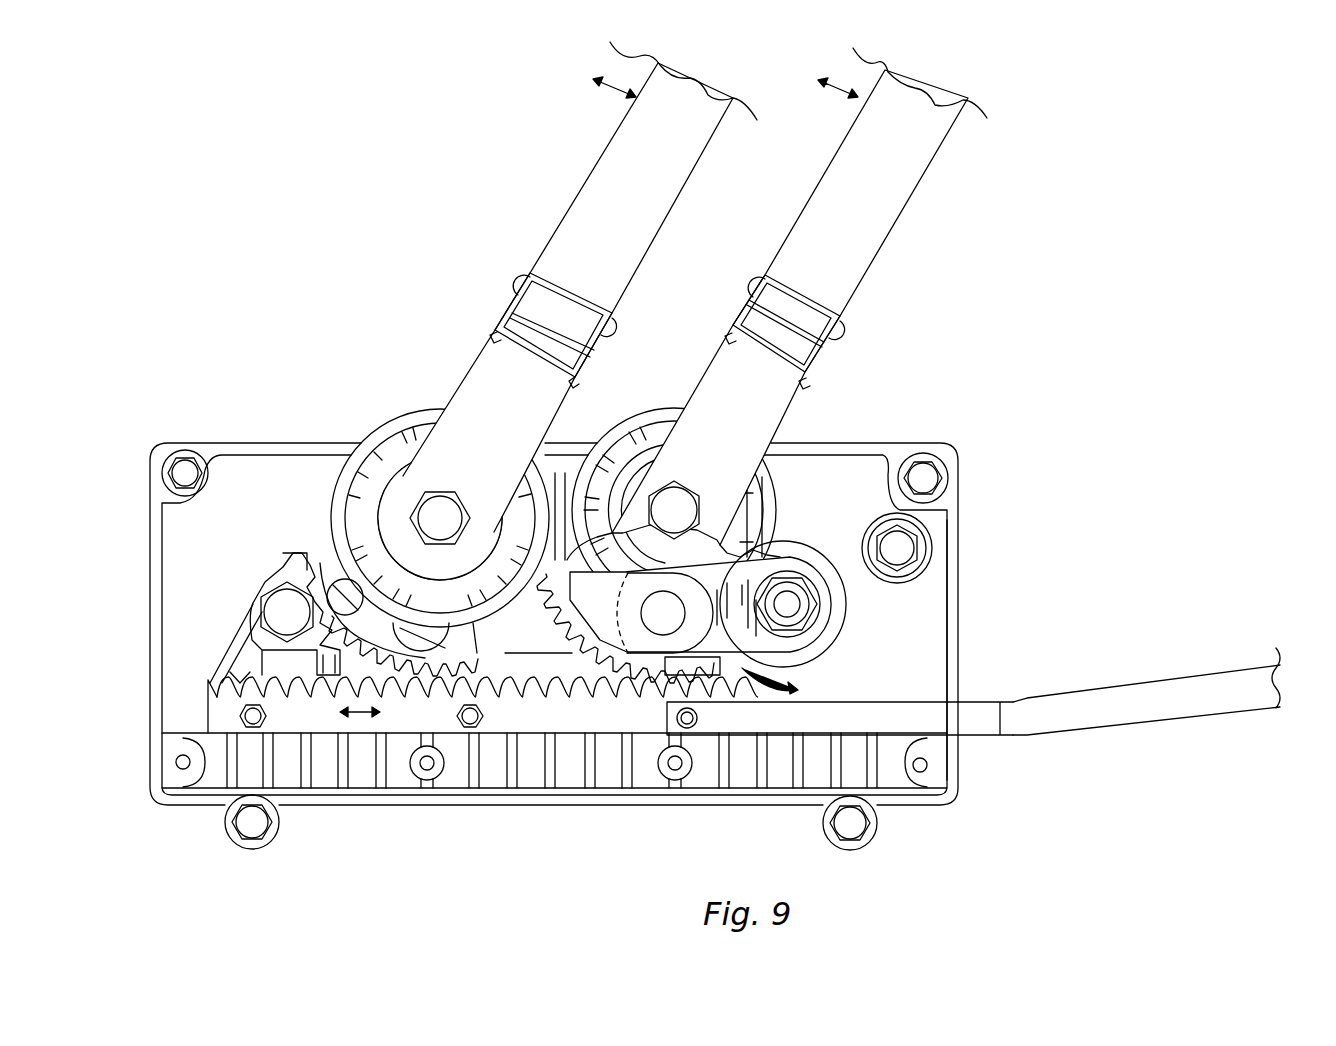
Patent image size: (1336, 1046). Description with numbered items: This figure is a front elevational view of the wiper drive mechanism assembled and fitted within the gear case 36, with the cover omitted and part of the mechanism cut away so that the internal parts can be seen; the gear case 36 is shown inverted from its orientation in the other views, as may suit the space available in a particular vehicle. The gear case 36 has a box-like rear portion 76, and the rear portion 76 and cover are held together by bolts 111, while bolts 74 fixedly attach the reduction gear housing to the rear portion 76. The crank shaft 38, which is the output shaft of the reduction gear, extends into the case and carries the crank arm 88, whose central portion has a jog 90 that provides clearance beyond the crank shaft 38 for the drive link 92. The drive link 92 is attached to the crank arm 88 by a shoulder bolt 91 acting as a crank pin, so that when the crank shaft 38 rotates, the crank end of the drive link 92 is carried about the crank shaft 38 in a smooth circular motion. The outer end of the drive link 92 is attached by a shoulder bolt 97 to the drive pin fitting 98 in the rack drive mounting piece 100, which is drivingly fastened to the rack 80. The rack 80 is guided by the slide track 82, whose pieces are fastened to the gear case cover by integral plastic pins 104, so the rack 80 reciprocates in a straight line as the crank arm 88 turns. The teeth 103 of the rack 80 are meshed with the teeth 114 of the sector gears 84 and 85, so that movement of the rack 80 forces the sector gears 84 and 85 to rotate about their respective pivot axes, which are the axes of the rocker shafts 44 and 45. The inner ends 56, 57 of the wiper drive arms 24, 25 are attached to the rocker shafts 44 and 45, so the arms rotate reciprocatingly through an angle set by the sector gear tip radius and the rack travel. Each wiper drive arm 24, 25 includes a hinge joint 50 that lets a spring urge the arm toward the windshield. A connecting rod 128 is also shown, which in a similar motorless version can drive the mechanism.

The wiper drive arm 24 is at (880, 258).
The wiper drive arm 25 is at (570, 248).
The gear case 36 is at (912, 440).
The crank shaft 38 is at (792, 607).
The rocker shaft 44 is at (678, 507).
The rocker shaft 45 is at (430, 513).
The hinge joint 50 is at (612, 320).
The inner end 56 is at (763, 420).
The inner end 57 is at (485, 385).
The bolt 74 is at (898, 547).
The rear portion 76 is at (960, 610).
The rack 80 is at (220, 703).
The slide track 82 is at (527, 765).
The sector gear 84 is at (553, 477).
The sector gear 85 is at (323, 553).
The crank arm 88 is at (822, 627).
The jog 90 is at (745, 585).
The shoulder bolt 91 is at (667, 612).
The drive link 92 is at (497, 637).
The shoulder bolt 97 is at (280, 610).
The drive pin fitting 98 is at (267, 588).
The rack drive mounting piece 100 is at (247, 637).
The teeth 103 is at (243, 672).
The plastic pin 104 is at (427, 770).
The bolt 111 is at (928, 478).
The teeth 114 is at (283, 570).
The connecting rod 128 is at (1113, 690).